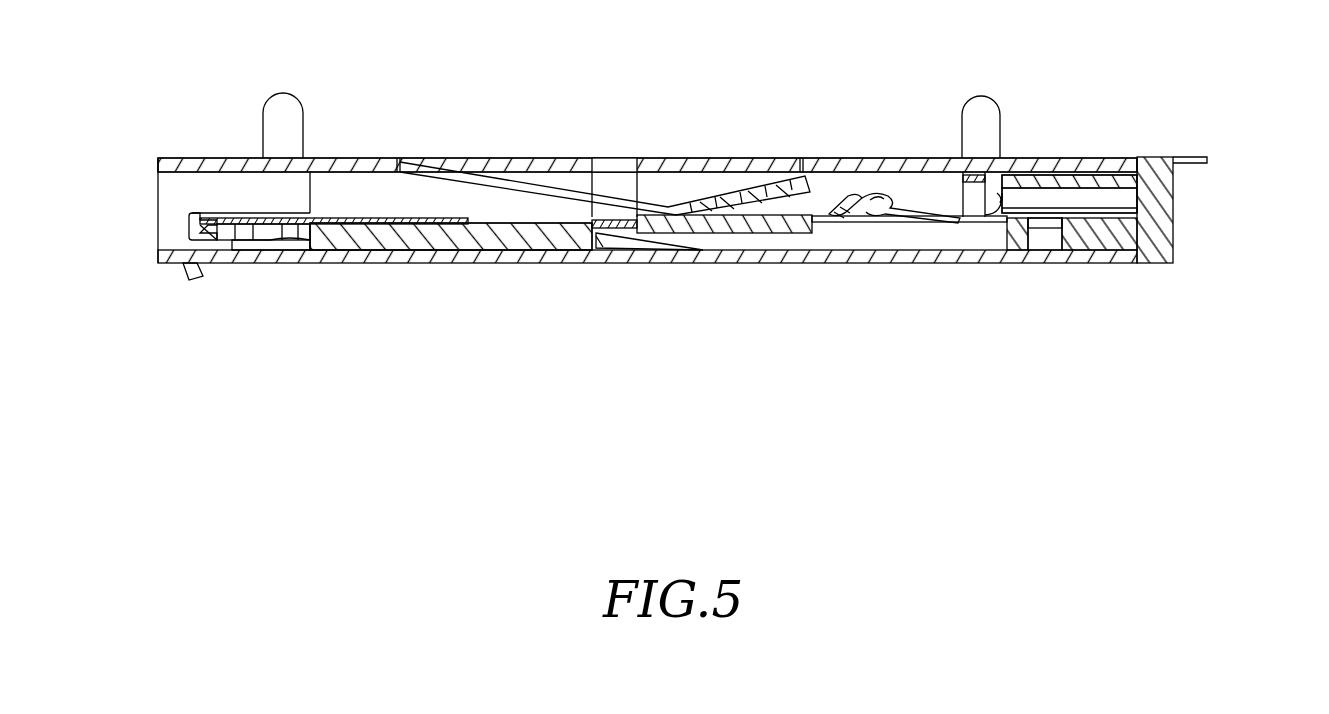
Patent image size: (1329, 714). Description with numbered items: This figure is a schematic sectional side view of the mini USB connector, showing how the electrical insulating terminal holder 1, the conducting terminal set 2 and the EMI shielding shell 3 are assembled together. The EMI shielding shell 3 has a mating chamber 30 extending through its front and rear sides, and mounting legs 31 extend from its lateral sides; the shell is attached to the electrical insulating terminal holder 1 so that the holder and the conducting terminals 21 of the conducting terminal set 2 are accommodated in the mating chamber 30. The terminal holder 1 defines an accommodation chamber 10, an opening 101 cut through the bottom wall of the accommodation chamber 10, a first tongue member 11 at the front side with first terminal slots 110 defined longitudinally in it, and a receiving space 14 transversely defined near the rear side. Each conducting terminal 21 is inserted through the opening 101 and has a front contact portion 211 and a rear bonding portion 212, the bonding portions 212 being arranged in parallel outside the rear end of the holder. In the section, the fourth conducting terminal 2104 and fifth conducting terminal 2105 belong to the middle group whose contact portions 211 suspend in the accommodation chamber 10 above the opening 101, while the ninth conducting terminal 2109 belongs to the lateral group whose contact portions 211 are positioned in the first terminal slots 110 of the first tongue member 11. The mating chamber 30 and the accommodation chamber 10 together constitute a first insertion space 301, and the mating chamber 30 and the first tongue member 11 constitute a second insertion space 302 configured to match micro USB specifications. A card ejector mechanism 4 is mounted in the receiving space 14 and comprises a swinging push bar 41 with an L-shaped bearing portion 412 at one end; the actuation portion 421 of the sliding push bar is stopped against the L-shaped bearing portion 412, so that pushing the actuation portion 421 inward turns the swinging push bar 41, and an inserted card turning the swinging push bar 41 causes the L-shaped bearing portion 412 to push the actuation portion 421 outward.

The conducting terminal set 2 is at (615, 80).
The EMI shielding shell 3 is at (1081, 166).
The mating chamber 30 is at (158, 180).
The first insertion space 301 is at (936, 176).
The second insertion space 302 is at (348, 185).
The mounting legs 31 is at (991, 117).
The conducting terminal 21 is at (620, 220).
The contact portion 211 is at (437, 216).
The bonding portion 212 is at (1195, 158).
The fourth conducting terminal 2104 is at (880, 200).
The fifth conducting terminal 2105 is at (842, 212).
The ninth conducting terminal 2109 is at (236, 215).
The electrical insulating terminal holder 1 is at (1090, 242).
The accommodation chamber 10 is at (496, 225).
The opening 101 is at (847, 252).
The first tongue member 11 is at (356, 243).
The first terminal slots 110 is at (190, 219).
The receiving space 14 is at (1138, 228).
The card ejector mechanism 4 is at (1248, 199).
The swinging push bar 41 is at (1110, 185).
The L-shaped bearing portion 412 is at (982, 192).
The actuation portion 421 is at (990, 200).